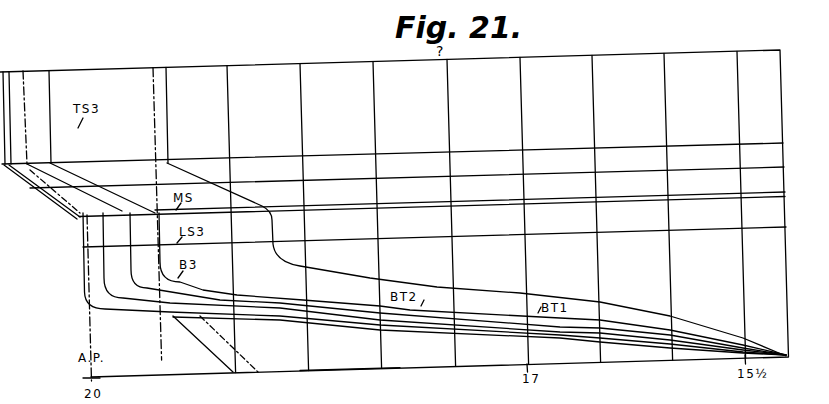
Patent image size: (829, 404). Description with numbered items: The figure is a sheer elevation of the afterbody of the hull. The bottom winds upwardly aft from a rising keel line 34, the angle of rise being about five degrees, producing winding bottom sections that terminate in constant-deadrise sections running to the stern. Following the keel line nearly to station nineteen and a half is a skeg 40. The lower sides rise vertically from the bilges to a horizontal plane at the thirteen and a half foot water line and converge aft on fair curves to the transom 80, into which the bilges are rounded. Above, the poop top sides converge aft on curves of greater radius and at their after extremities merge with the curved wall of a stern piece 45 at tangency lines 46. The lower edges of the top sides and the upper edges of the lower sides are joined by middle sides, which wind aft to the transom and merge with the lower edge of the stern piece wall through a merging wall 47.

The keel line 34 is at (139, 309).
The skeg 40 is at (348, 356).
The merging wall 47 is at (45, 196).
The transom 80 is at (82, 233).
The stern piece 45 is at (14, 7).
The tangency lines 46 is at (92, 9).